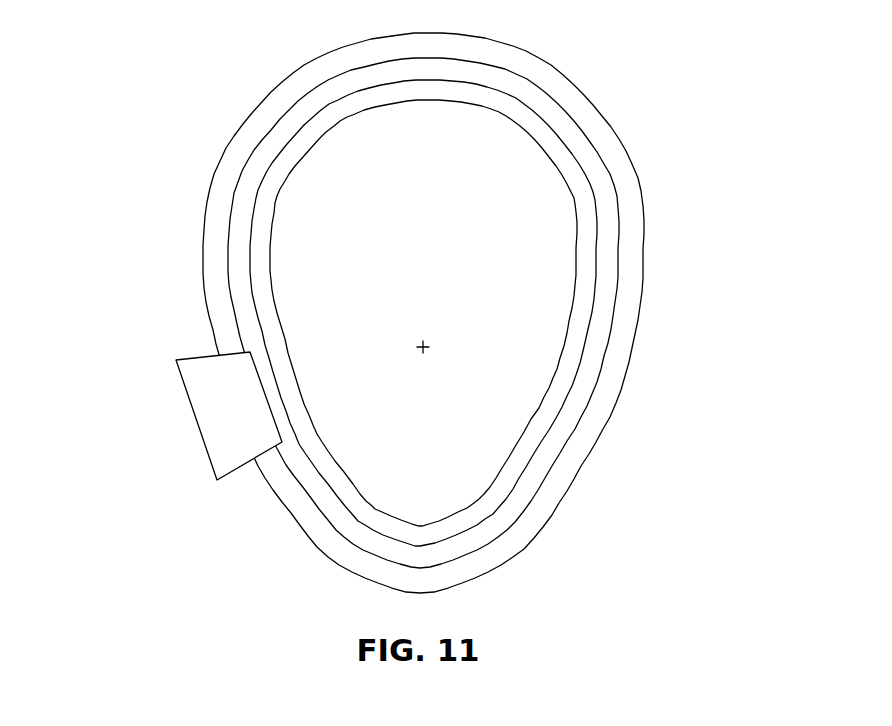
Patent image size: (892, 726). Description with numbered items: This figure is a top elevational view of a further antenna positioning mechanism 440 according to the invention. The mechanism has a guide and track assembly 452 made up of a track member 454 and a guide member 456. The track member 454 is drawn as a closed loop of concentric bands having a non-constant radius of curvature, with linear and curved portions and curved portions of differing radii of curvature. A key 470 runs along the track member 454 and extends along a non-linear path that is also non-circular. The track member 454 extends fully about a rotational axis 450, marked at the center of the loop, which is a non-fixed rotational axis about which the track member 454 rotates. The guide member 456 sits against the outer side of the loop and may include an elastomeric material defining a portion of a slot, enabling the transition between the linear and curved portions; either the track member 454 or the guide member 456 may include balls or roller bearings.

The antenna positioning mechanism 440 is at (414, 313).
The rotational axis 450 is at (431, 346).
The guide and track assembly 452 is at (195, 292).
The track member 454 is at (644, 262).
The guide member 456 is at (237, 477).
The key 470 is at (238, 153).